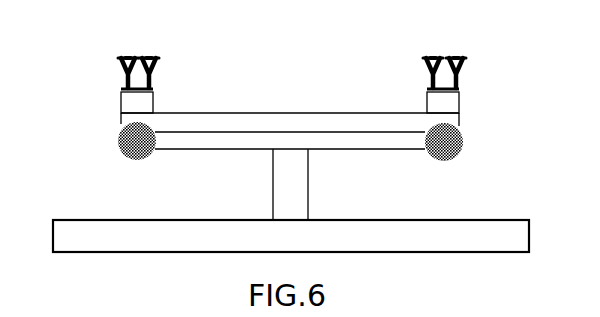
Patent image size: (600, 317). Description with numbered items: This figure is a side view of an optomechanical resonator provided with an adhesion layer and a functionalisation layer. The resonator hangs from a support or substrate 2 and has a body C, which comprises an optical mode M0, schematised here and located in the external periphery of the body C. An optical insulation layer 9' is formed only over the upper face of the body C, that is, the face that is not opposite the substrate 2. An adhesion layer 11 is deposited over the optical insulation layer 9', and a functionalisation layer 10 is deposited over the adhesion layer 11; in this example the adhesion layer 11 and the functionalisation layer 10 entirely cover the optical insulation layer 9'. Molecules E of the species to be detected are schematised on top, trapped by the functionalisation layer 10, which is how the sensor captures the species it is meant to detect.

The substrate 2 is at (522, 236).
The body C is at (360, 148).
The optical insulation layer 9' is at (290, 102).
The optical mode M0 is at (465, 145).
The adhesion layer 11 is at (126, 100).
The functionalisation layer 10 is at (120, 89).
The molecules E is at (150, 56).